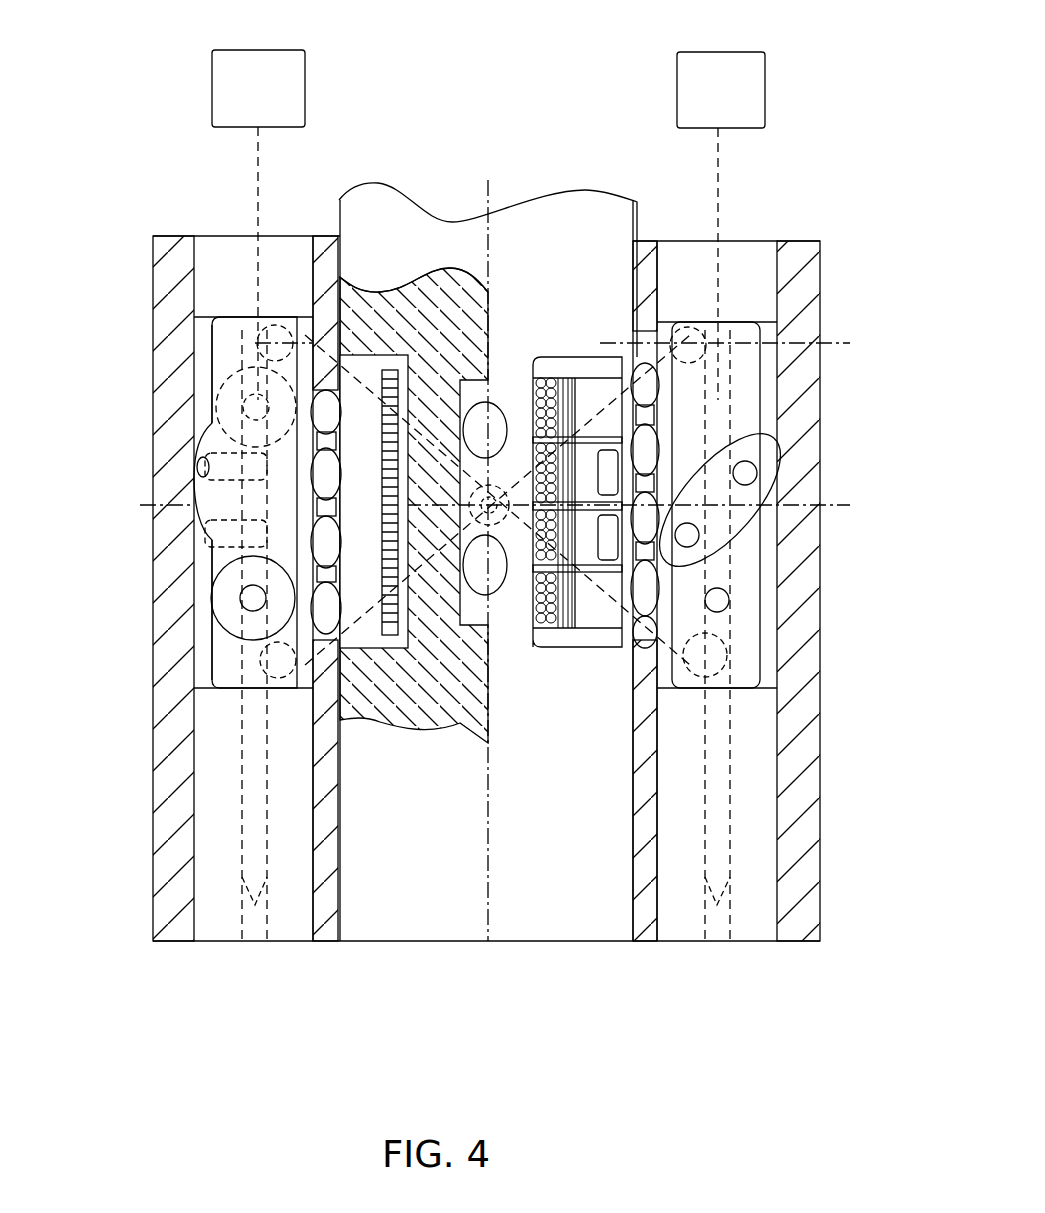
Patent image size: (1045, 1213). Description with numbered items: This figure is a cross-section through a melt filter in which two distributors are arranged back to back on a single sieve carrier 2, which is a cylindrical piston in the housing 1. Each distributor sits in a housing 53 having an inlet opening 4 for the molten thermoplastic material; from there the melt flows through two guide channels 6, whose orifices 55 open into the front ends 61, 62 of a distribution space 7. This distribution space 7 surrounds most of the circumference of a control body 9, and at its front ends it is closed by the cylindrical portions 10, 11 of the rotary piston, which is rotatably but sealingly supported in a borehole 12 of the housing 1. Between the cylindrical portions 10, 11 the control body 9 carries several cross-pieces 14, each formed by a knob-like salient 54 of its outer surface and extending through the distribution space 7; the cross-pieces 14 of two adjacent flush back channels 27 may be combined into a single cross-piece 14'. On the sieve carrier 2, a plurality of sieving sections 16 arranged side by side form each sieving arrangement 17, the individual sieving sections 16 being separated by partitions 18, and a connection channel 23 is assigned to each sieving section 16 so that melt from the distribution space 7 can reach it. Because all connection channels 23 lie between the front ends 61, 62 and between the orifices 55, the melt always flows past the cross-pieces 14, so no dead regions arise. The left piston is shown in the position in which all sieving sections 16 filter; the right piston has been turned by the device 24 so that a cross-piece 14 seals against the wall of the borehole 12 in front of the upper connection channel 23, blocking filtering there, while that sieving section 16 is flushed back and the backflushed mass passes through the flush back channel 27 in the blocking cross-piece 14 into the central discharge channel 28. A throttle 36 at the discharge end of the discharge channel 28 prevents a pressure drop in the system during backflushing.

The housing 1 is at (832, 548).
The sieve carrier 2 is at (550, 262).
The inlet opening 4 is at (438, 470).
The guide channels 6 is at (353, 613).
The distribution space 7 is at (210, 373).
The control body 9 is at (208, 228).
The cylindrical portion 10 is at (746, 250).
The cylindrical portion 11 is at (215, 768).
The borehole 12 is at (772, 881).
The cross-piece 14 is at (486, 449).
The single cross-piece 14' is at (490, 476).
The sieving section 16 is at (606, 617).
The sieving arrangement 17 is at (355, 345).
The partition 18 is at (563, 380).
The connection channel 23 is at (640, 647).
The device 24 is at (252, 83).
The flush back channel 27 is at (200, 464).
The discharge channel 28 is at (240, 826).
The throttle 36 is at (260, 898).
The housing 53 is at (150, 295).
The knob-like salient 54 is at (238, 586).
The orifice 55 is at (303, 320).
The front end 61 is at (205, 355).
The front end 62 is at (243, 686).